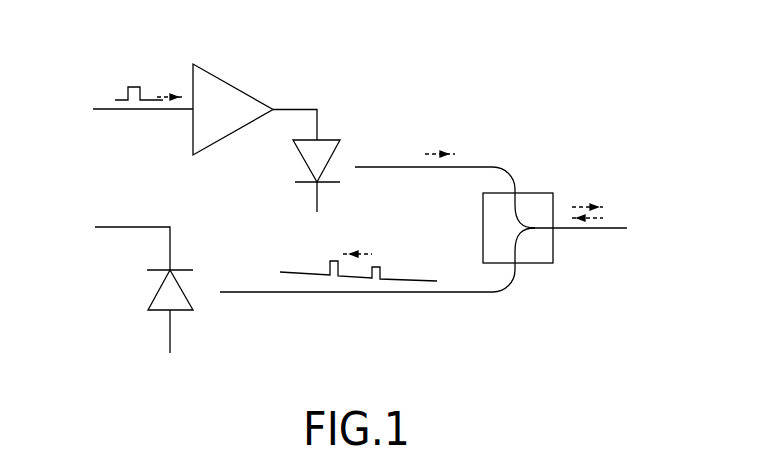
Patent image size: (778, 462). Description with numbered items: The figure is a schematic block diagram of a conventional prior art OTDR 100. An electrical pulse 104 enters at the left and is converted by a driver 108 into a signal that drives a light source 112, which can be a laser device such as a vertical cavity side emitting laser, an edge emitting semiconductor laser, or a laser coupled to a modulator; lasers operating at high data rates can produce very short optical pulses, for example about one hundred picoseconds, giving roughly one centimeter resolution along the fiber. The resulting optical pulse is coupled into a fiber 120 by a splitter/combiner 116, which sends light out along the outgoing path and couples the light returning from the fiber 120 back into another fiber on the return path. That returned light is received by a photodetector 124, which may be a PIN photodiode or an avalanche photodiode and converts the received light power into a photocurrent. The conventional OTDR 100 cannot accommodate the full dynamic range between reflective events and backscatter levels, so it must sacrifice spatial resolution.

The OTDR 100 is at (512, 37).
The electrical pulse 104 is at (130, 98).
The driver 108 is at (225, 82).
The light source 112 is at (328, 140).
The splitter/combiner 116 is at (553, 203).
The fiber 120 is at (607, 230).
The photodetector 124 is at (158, 310).